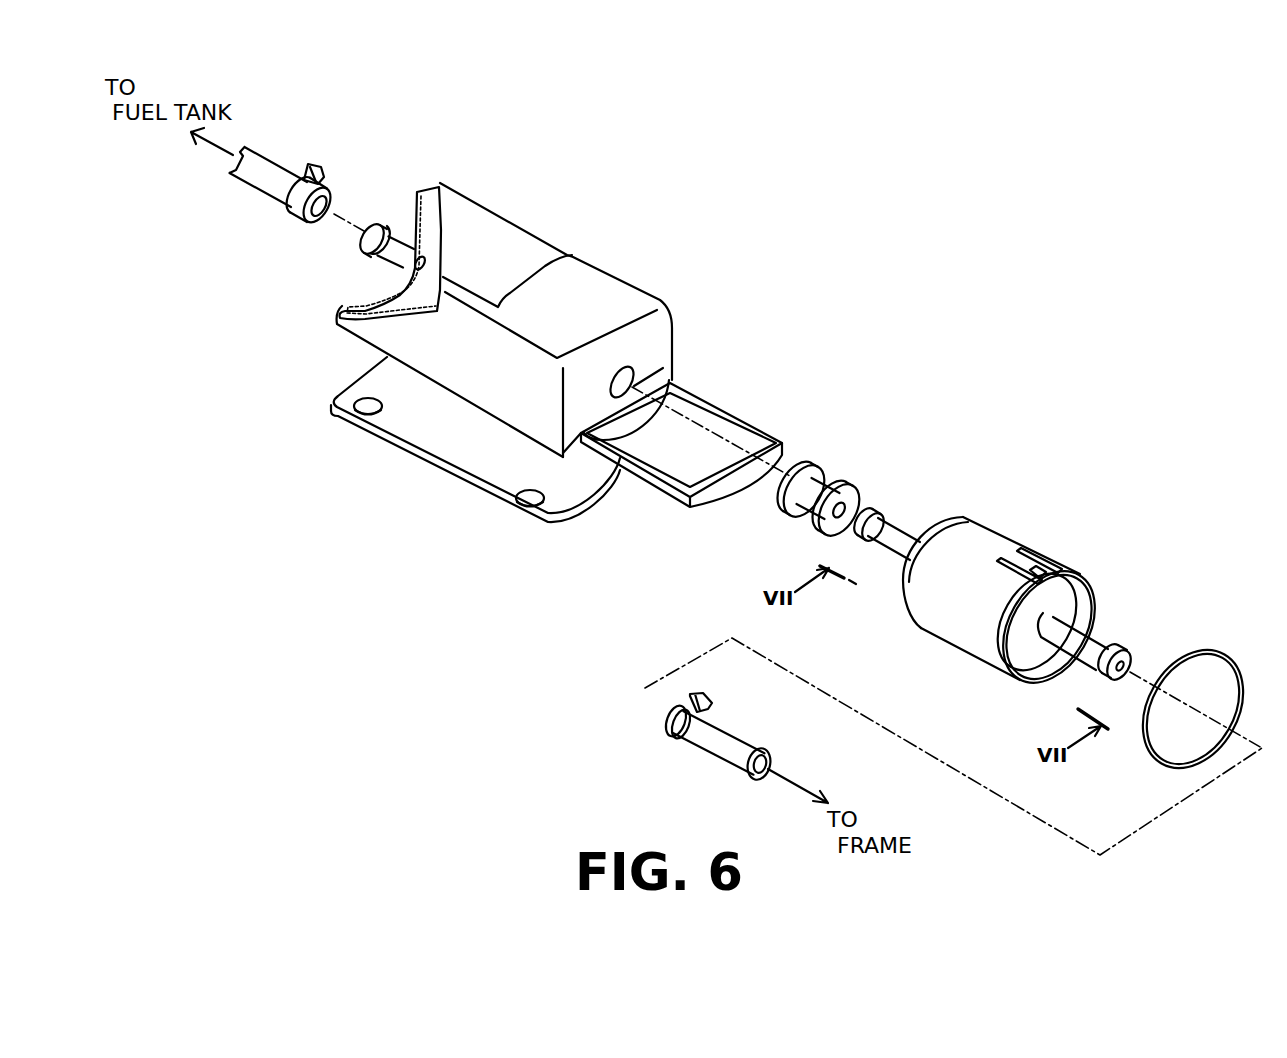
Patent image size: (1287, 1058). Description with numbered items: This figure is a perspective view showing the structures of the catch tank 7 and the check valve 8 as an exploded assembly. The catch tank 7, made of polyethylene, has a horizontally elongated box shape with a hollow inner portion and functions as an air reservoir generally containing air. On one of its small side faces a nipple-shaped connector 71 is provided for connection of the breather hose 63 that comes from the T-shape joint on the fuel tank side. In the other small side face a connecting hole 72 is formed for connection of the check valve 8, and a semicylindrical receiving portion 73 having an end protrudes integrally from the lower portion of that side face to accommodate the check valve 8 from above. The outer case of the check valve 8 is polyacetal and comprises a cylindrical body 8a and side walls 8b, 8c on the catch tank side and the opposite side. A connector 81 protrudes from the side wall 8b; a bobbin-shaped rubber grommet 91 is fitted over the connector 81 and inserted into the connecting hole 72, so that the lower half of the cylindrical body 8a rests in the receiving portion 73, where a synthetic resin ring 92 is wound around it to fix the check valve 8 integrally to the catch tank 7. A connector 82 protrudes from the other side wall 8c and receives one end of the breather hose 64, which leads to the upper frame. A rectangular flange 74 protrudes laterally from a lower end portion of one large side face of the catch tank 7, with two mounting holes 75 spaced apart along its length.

The catch tank 7 is at (544, 358).
The nipple-shaped connector 71 is at (364, 246).
The connecting hole 72 is at (644, 392).
The semicylindrical receiving portion 73 is at (707, 415).
The rectangular flange 74 is at (452, 457).
The mounting holes 75 is at (370, 402).
The check valve 8 is at (1010, 560).
The cylindrical body 8a is at (943, 633).
The side wall 8b is at (905, 587).
The side wall 8c is at (1028, 643).
The connector 81 is at (900, 523).
The connector 82 is at (1092, 642).
The rubber grommet 91 is at (812, 478).
The synthetic resin ring 92 is at (1200, 655).
The breather hose 63 is at (275, 178).
The breather hose 64 is at (707, 745).